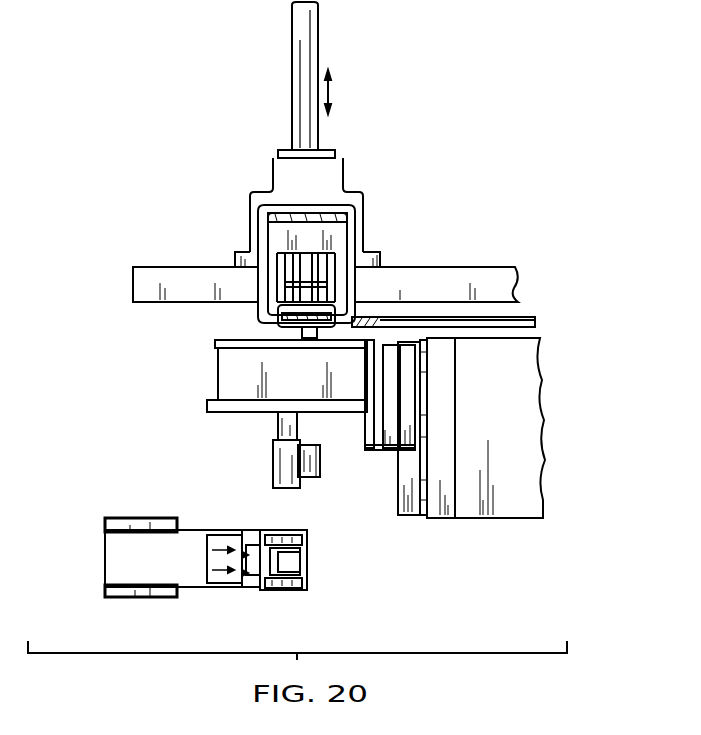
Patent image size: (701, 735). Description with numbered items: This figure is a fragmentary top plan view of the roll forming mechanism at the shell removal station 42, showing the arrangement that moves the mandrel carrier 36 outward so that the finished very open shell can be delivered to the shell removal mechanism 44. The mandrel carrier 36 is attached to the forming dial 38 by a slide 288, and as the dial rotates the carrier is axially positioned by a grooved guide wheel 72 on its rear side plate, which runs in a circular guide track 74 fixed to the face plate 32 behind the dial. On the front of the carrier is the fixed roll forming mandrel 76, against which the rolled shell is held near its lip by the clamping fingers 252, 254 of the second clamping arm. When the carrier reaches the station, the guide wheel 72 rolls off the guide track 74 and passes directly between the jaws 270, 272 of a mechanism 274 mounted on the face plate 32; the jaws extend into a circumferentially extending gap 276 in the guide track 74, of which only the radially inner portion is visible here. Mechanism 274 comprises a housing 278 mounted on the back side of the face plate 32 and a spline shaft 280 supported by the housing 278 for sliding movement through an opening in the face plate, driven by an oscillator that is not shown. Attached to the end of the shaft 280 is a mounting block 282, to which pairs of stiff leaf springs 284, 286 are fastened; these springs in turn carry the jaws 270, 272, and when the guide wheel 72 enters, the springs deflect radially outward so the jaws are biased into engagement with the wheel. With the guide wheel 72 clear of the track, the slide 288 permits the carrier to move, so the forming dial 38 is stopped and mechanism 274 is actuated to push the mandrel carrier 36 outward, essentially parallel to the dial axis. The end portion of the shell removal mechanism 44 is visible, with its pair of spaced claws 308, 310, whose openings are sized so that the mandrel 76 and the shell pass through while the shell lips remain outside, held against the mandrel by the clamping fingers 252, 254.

The spline shaft 280 is at (302, 33).
The housing 278 is at (332, 180).
The mechanism 274 is at (238, 224).
The mounting block 282 is at (277, 232).
The pair of stiff leaf springs 284 is at (285, 282).
The pair of stiff leaf springs 286 is at (326, 277).
The jaw 272 is at (346, 296).
The circumferentially extending gap 276 is at (354, 305).
The jaw 270 is at (262, 308).
The grooved guide wheel 72 is at (282, 327).
The face plate 32 is at (505, 280).
The circular guide track 74 is at (530, 318).
The mandrel carrier 36 is at (230, 370).
The roll forming mandrel 76 is at (280, 456).
The clamping finger 254 is at (304, 450).
The clamping finger 252 is at (310, 478).
The slide 288 is at (400, 432).
The forming dial 38 is at (520, 495).
The shell removal mechanism 44 is at (252, 578).
The claw 310 is at (270, 532).
The claw 308 is at (290, 590).
The shell removal station 42 is at (341, 548).